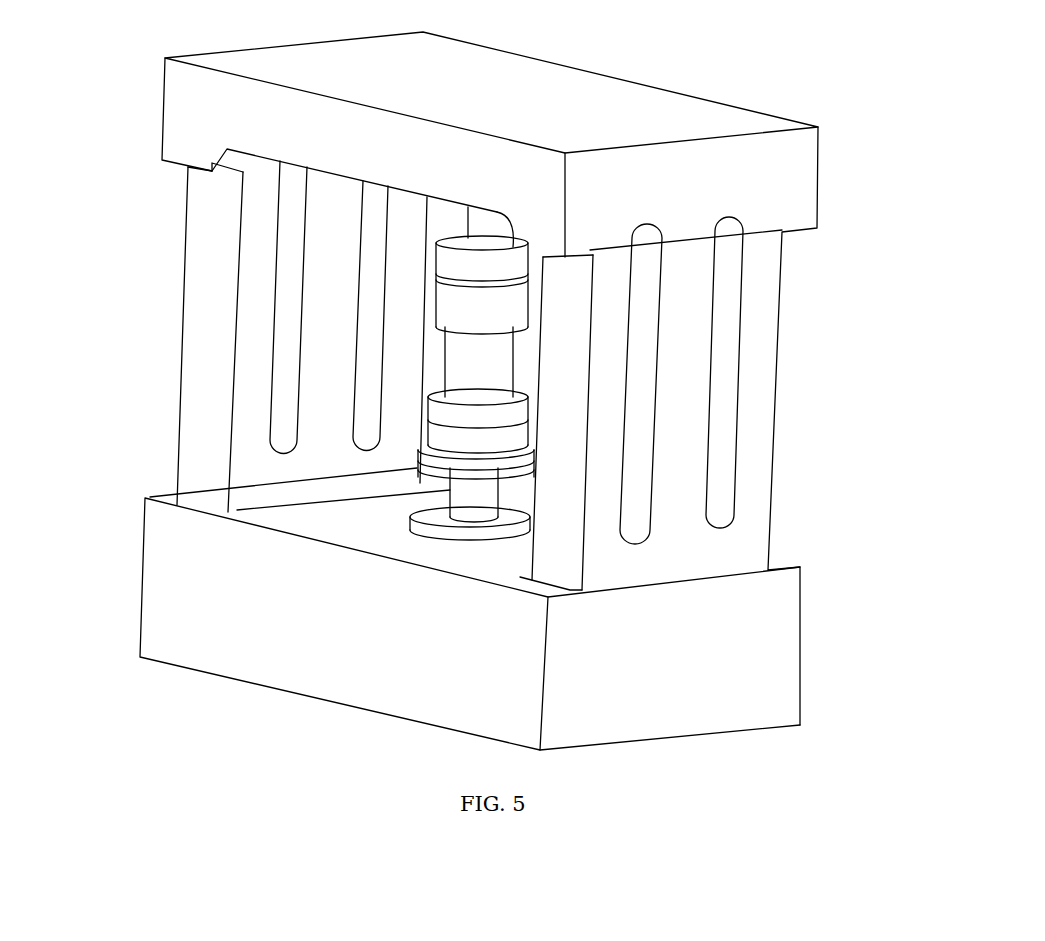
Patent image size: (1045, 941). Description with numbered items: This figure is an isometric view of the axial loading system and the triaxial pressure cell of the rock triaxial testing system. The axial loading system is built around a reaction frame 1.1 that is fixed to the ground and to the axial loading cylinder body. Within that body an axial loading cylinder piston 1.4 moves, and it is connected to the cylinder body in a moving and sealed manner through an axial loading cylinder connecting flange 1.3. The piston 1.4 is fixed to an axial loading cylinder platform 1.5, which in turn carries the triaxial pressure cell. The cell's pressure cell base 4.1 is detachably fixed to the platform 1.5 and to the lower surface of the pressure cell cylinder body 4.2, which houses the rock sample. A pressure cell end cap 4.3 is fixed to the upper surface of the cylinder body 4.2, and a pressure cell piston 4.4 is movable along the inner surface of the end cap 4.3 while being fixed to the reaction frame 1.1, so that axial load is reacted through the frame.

The reaction frame 1.1 is at (216, 599).
The axial loading cylinder connecting flange 1.3 is at (400, 530).
The axial loading cylinder piston 1.4 is at (489, 506).
The axial loading cylinder platform 1.5 is at (505, 464).
The pressure cell base 4.1 is at (437, 428).
The pressure cell cylinder body 4.2 is at (487, 367).
The pressure cell end cap 4.3 is at (480, 266).
The pressure cell piston 4.4 is at (459, 226).